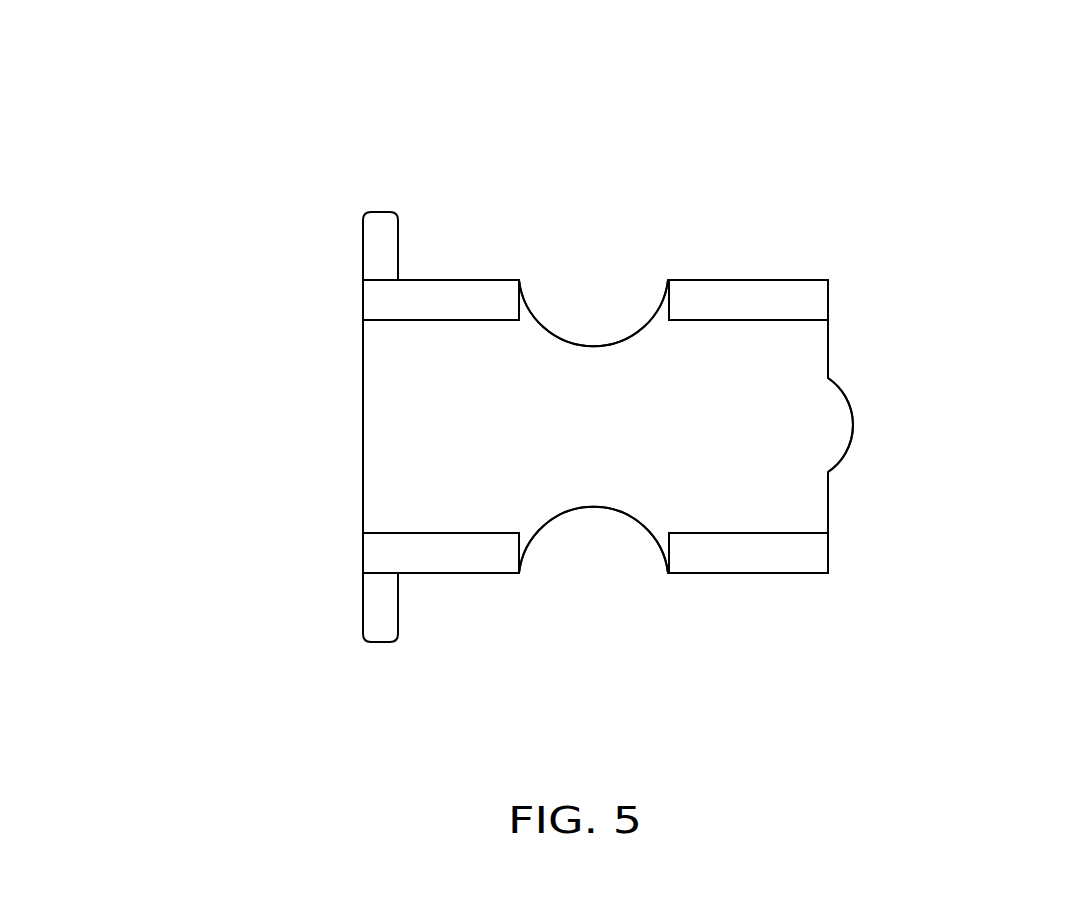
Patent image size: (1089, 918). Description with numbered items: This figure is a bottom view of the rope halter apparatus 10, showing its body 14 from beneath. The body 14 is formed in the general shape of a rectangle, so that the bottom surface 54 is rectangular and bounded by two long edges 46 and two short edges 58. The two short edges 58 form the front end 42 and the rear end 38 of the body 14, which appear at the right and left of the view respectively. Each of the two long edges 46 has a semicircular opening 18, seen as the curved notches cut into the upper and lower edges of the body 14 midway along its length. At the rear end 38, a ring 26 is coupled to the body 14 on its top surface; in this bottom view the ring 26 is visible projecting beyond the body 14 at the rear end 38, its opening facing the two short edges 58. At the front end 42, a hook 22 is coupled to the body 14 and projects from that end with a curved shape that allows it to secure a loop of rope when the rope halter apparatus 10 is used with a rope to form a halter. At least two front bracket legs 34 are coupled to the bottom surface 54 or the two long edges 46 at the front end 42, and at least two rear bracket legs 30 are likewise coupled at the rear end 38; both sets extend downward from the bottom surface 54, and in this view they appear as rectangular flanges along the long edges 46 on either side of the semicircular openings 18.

The rope halter apparatus 10 is at (855, 146).
The body 14 is at (749, 464).
The semicircular opening 18 is at (549, 330).
The hook 22 is at (838, 415).
The ring 26 is at (381, 232).
The rear bracket legs 30 is at (470, 297).
The front bracket legs 34 is at (800, 300).
The rear end 38 is at (363, 487).
The front end 42 is at (828, 340).
The long edges 46 is at (698, 280).
The bottom surface 54 is at (763, 512).
The short edges 58 is at (363, 393).